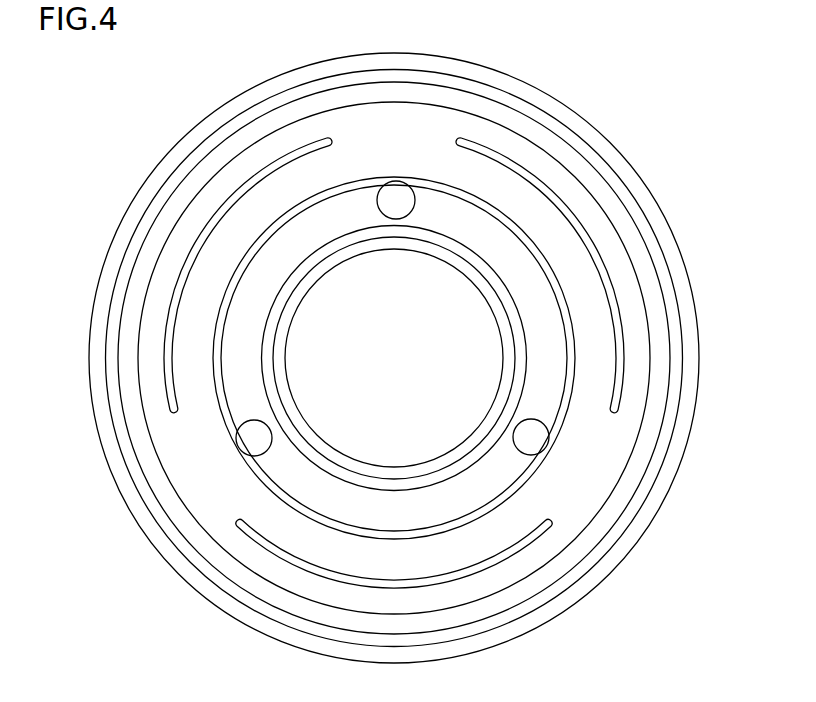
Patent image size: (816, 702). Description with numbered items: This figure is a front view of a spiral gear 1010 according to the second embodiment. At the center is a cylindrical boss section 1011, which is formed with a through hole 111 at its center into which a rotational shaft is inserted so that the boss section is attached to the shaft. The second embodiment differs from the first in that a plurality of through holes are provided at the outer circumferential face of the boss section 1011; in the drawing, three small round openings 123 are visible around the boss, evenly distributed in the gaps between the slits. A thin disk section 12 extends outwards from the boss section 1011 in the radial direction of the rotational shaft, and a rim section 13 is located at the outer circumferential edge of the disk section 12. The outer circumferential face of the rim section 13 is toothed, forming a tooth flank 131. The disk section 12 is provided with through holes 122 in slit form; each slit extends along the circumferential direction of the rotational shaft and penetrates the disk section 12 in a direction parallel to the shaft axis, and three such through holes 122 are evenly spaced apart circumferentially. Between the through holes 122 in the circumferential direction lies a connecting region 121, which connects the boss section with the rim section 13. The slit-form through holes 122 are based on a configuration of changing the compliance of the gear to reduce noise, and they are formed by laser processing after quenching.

The spiral gear 1010 is at (690, 71).
The through hole 111 is at (287, 343).
The through hole 122 is at (613, 292).
The circular hole 123 is at (243, 441).
The connecting region 121 is at (200, 478).
The tooth flank 131 is at (693, 433).
The rim section 13 is at (657, 463).
The disk section 12 is at (598, 479).
The boss section 1011 is at (507, 467).